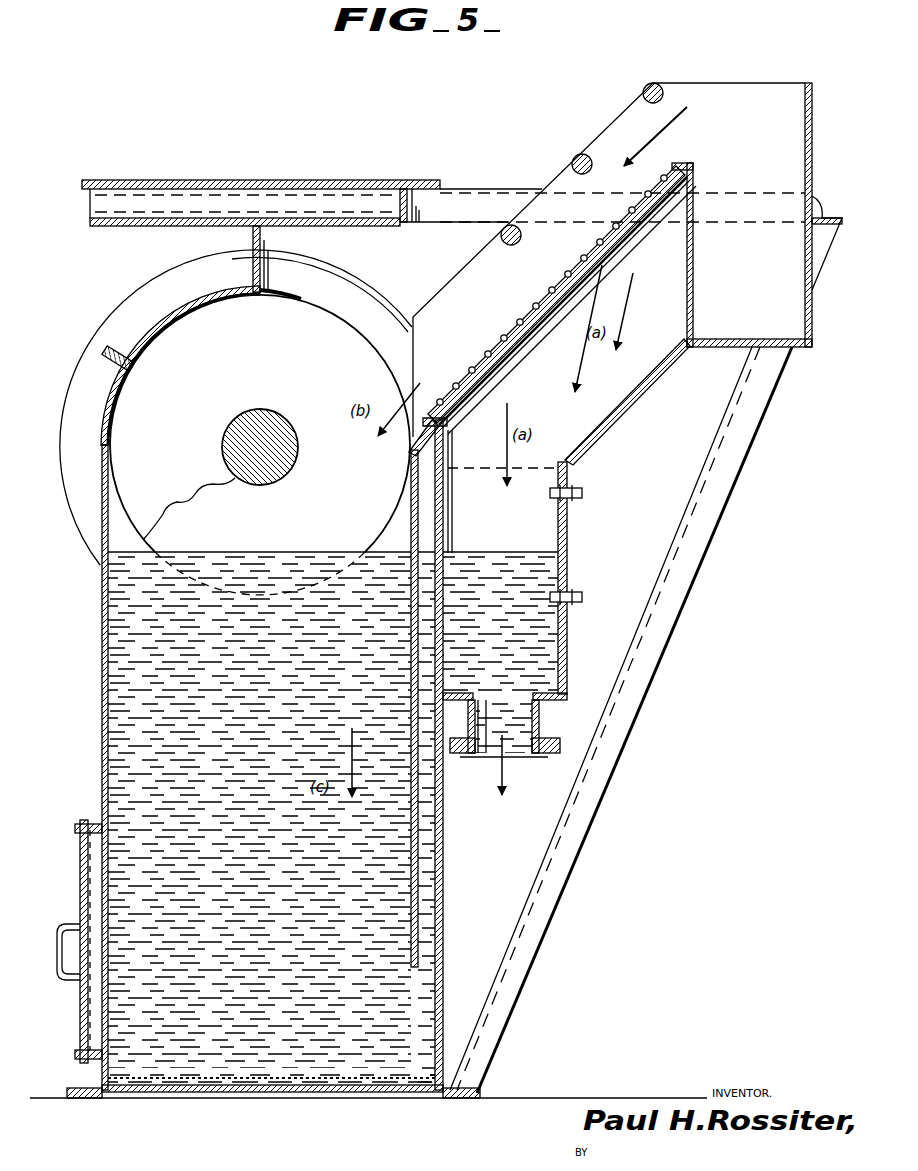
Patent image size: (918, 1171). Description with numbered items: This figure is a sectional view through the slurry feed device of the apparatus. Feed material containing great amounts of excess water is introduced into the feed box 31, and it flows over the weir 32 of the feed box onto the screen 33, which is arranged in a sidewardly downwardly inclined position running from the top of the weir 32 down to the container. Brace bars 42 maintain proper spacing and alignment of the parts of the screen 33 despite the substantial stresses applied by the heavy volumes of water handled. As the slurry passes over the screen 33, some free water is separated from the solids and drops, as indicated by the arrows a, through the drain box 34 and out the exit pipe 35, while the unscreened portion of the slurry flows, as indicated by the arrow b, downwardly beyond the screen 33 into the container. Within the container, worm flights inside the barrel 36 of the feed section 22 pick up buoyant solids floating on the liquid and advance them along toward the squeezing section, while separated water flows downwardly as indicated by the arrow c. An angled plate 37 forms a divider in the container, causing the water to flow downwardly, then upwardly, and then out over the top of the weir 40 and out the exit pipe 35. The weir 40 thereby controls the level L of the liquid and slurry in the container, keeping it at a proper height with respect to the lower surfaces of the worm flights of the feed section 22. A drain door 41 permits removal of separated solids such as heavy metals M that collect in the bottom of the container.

The feed section 22 is at (123, 287).
The feed box 31 is at (726, 103).
The weir 32 is at (696, 258).
The screen 33 is at (476, 338).
The drain box 34 is at (612, 404).
The exit pipe 35 is at (543, 705).
The barrel 36 is at (150, 330).
The angled plate 37 is at (420, 843).
The weir 40 is at (445, 546).
The drain door 41 is at (78, 879).
The brace bars 42 is at (582, 152).
The level of liquid and slurry L is at (318, 548).
The heavy metals M is at (196, 1092).